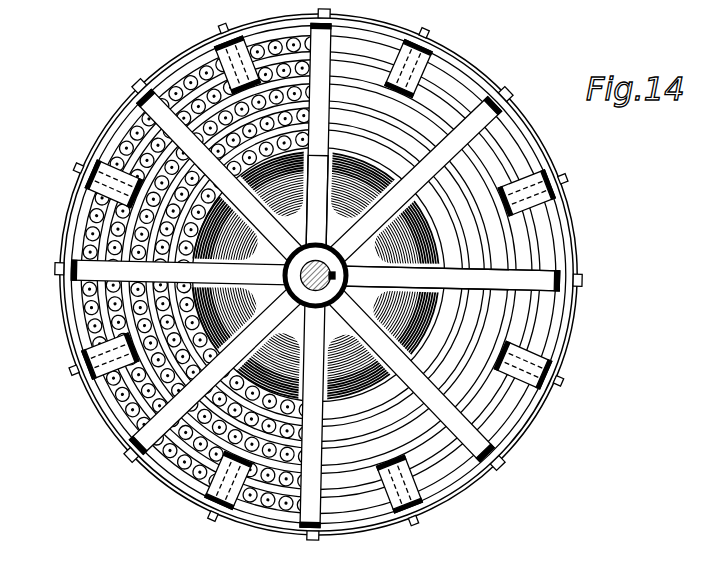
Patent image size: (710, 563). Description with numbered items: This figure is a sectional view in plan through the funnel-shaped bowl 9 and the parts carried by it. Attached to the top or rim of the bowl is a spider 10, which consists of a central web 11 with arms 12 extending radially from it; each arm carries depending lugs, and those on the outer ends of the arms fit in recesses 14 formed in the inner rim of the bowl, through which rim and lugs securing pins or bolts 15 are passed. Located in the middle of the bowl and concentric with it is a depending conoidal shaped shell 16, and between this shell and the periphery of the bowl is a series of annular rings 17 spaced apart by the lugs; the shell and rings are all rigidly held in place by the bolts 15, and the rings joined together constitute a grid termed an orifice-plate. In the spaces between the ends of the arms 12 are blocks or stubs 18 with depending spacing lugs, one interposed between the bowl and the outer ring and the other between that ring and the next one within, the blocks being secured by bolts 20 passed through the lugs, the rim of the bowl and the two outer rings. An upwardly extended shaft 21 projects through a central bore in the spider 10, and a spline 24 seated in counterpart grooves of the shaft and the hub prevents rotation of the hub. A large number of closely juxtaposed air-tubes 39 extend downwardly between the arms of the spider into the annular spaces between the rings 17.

The funnel-shaped bowl 9 is at (570, 320).
The spider 10 is at (322, 273).
The central web 11 is at (332, 228).
The arms 12 is at (480, 117).
The recesses 14 is at (68, 267).
The securing pins or bolts 15 is at (506, 90).
The conoidal shaped shell 16 is at (441, 306).
The annular rings 17 is at (453, 380).
The blocks or stubs 18 is at (222, 52).
The bolts 20 is at (223, 29).
The shaft 21 is at (286, 275).
The spline 24 is at (335, 276).
The air-tubes 39 is at (140, 101).